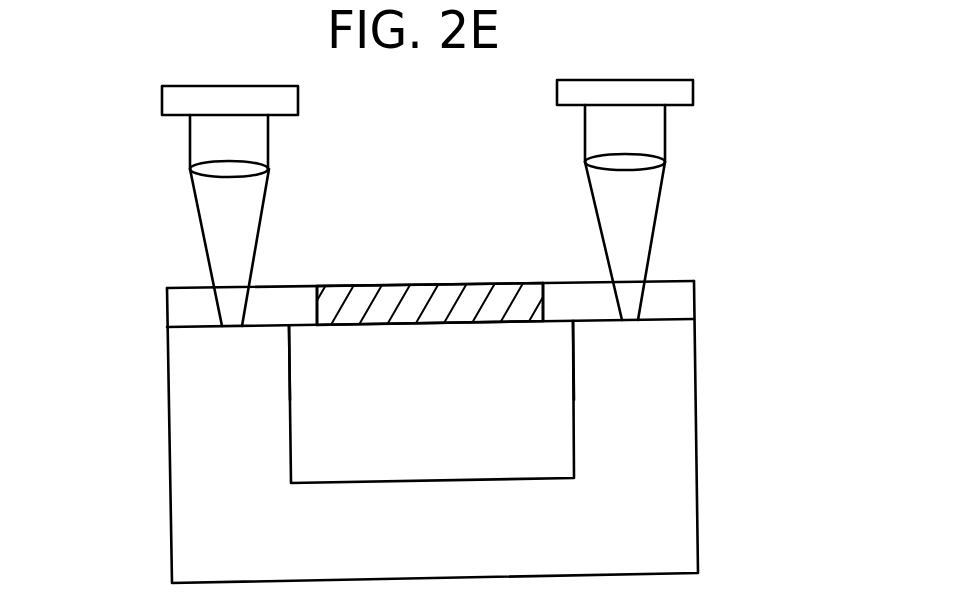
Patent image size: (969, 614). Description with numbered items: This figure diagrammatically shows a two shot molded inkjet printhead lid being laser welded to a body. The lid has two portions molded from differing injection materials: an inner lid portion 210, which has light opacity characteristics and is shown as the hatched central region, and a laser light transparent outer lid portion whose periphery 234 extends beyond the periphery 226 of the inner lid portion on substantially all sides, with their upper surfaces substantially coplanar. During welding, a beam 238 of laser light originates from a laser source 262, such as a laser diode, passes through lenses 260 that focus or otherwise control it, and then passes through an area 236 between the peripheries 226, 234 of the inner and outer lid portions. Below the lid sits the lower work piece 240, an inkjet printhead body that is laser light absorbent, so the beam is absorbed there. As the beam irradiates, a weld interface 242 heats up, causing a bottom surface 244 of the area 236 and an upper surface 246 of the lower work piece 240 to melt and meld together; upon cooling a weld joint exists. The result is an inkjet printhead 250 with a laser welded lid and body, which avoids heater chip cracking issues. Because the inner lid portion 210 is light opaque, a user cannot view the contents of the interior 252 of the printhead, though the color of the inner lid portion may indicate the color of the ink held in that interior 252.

The inner lid portion 210 is at (430, 290).
The periphery of the inner lid portion 226 is at (293, 297).
The periphery of the outer lid portion 234 is at (167, 288).
The area 236 is at (178, 288).
The beam of laser light 238 is at (200, 215).
The lower work piece 240 is at (697, 413).
The weld interface 242 is at (167, 327).
The bottom surface of the area 244 is at (300, 327).
The upper surface of the lower work piece 246 is at (200, 328).
The inkjet printhead 250 is at (732, 452).
The interior of the inkjet printhead 252 is at (448, 434).
The lenses 260 is at (190, 169).
The laser source 262 is at (162, 103).